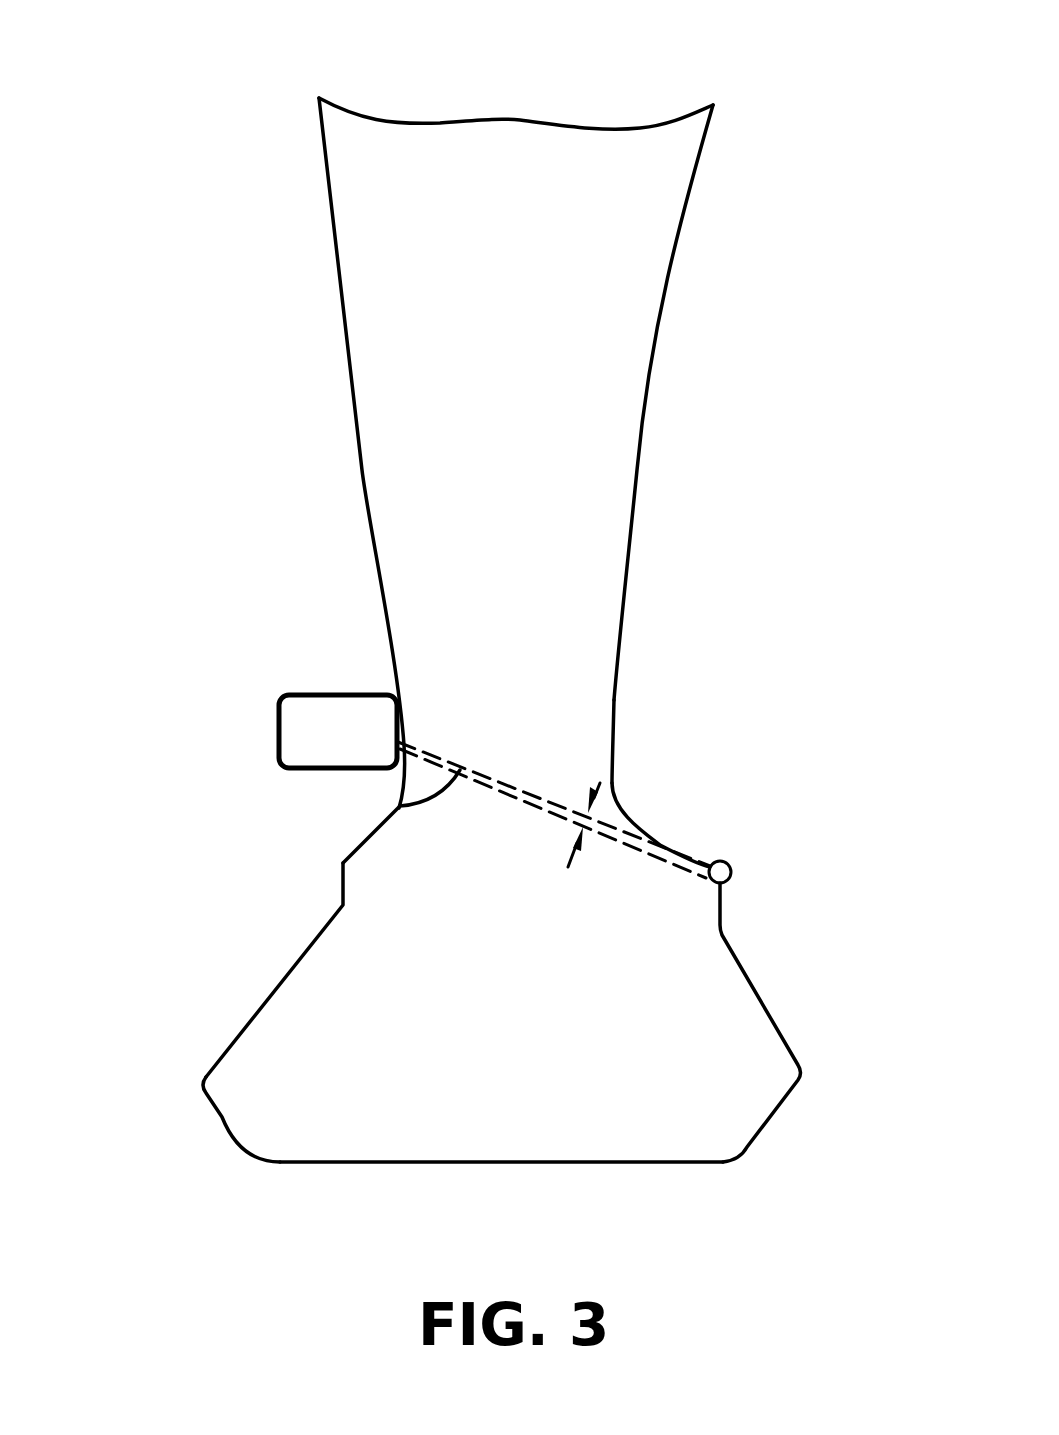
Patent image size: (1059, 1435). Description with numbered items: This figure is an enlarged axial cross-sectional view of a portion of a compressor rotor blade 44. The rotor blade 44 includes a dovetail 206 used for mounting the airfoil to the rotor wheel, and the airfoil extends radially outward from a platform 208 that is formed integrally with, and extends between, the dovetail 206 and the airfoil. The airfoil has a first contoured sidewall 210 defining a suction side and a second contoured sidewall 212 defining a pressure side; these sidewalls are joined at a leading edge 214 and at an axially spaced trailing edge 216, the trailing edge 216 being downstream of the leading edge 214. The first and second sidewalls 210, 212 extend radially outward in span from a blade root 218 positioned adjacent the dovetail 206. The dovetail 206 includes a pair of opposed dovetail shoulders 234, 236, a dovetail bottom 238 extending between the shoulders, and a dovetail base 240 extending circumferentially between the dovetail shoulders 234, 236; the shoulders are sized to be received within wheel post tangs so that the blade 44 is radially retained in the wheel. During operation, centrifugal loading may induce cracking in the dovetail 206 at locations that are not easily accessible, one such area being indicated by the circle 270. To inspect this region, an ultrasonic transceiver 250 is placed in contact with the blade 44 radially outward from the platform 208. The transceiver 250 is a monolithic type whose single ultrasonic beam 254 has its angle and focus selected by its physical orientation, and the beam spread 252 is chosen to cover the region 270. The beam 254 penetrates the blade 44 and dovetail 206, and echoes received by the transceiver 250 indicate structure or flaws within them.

The rotor blade 44 is at (639, 82).
The dovetail 206 is at (206, 1006).
The platform 208 is at (640, 835).
The first contoured sidewall 210 is at (572, 523).
The second contoured sidewall 212 is at (407, 423).
The leading edge 214 is at (372, 548).
The trailing edge 216 is at (623, 576).
The blade root 218 is at (593, 730).
The dovetail shoulder 234 is at (762, 1003).
The dovetail shoulder 236 is at (288, 970).
The dovetail bottom 238 is at (453, 1162).
The dovetail base 240 is at (218, 1113).
The ultrasonic transceiver 250 is at (337, 695).
The beam spread 252 is at (583, 847).
The ultrasonic beam 254 is at (400, 805).
The circle indicating crack area 270 is at (731, 868).